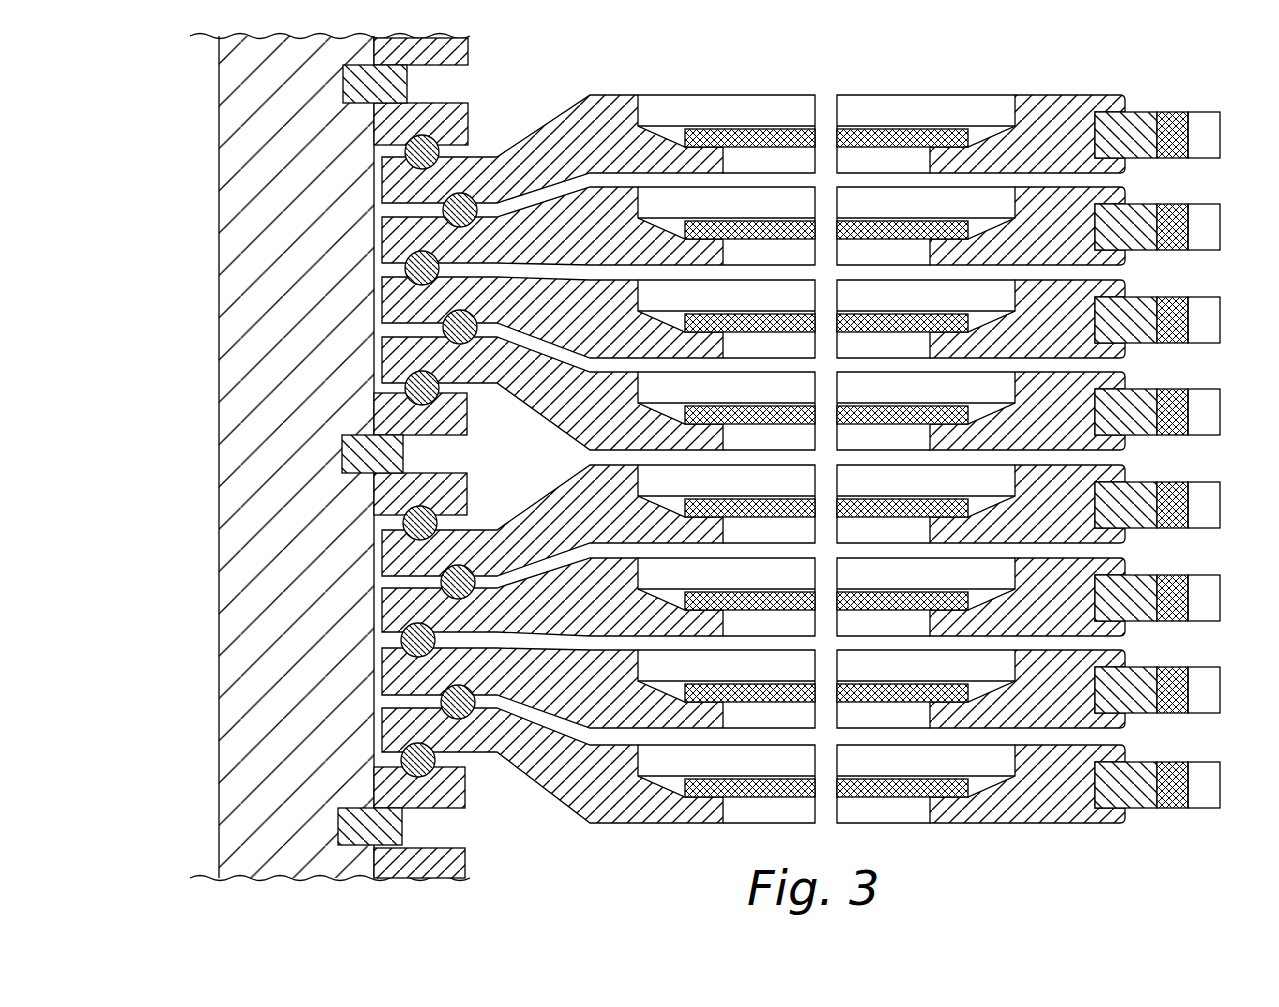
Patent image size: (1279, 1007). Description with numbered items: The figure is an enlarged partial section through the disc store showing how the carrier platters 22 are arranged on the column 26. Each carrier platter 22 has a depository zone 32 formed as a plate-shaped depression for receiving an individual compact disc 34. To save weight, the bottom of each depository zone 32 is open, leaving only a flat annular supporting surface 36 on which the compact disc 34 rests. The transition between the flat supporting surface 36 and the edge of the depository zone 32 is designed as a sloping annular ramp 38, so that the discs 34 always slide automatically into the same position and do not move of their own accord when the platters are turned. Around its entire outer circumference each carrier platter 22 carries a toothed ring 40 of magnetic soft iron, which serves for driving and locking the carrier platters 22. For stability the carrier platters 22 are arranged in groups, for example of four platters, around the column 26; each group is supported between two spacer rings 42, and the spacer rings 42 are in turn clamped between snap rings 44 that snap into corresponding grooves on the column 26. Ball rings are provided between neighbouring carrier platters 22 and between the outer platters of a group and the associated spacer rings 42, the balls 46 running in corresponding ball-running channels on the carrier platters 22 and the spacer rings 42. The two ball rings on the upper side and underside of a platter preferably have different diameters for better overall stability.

The carrier platter 22 is at (1136, 97).
The column 26 is at (227, 207).
The depository zone 32 is at (898, 121).
The compact disc 34 is at (933, 130).
The flat annular supporting surface 36 is at (700, 803).
The sloping annular ramp 38 is at (993, 790).
The toothed ring 40 is at (1173, 112).
The spacer ring 42 is at (468, 108).
The snap ring 44 is at (410, 80).
The ball 46 is at (438, 386).